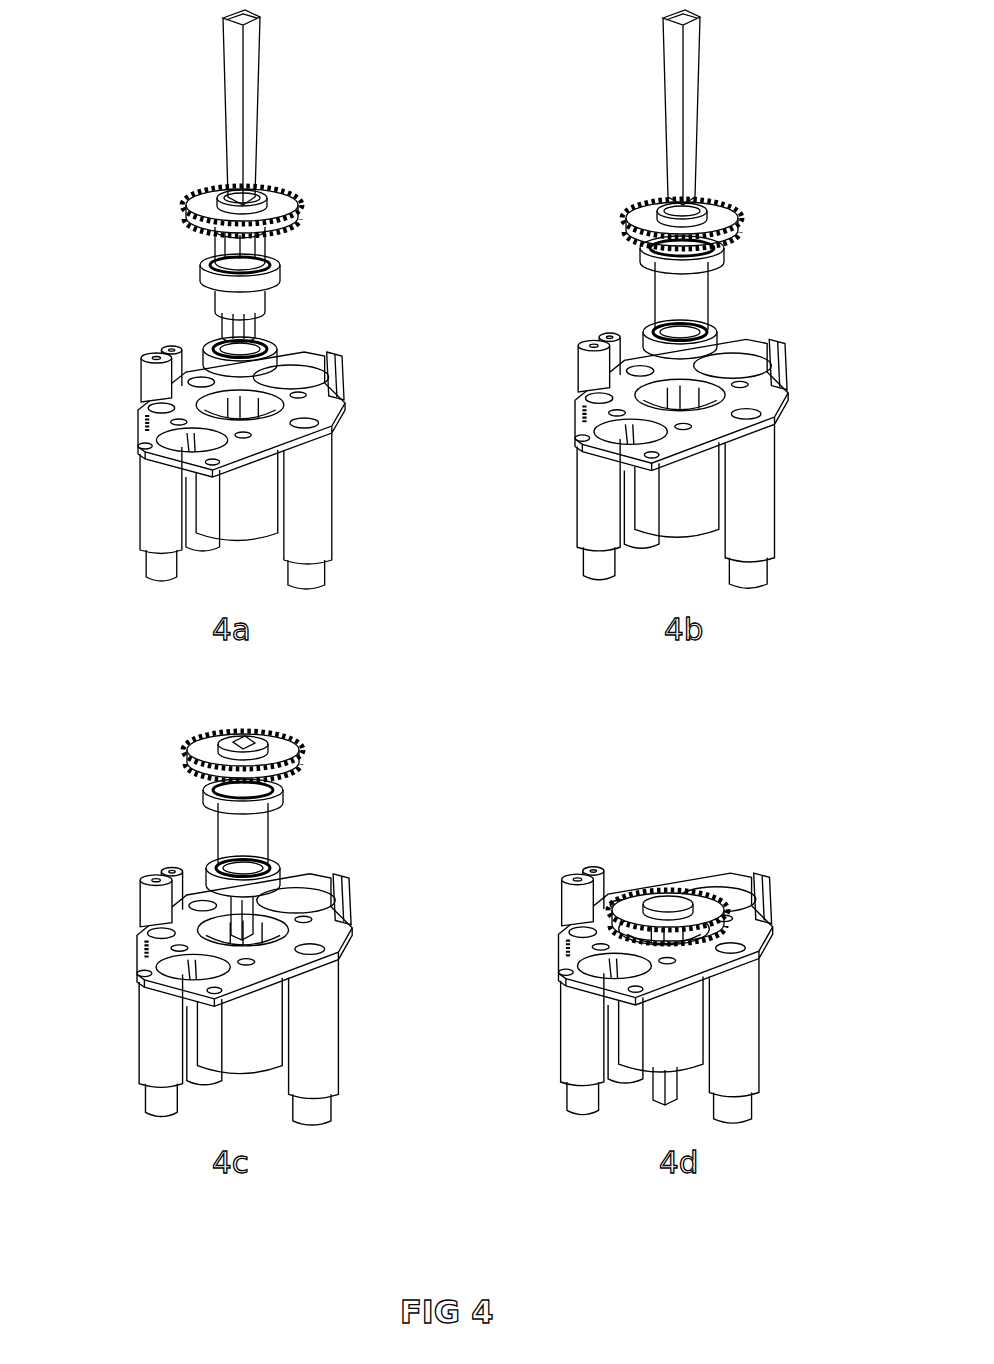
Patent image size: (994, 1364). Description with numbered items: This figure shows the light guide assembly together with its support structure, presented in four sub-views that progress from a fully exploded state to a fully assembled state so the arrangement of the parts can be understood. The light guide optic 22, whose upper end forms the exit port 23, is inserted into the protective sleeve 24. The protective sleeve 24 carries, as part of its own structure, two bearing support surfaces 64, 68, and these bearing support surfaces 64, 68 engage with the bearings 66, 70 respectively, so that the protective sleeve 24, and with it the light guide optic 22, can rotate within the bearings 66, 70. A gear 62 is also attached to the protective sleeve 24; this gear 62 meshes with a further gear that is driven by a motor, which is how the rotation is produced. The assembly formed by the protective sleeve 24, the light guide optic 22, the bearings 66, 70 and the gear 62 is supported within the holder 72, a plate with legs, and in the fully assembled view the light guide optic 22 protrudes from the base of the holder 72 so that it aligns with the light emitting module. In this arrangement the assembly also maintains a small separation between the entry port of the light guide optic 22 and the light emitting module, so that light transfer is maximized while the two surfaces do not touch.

The light guide optic 22 is at (236, 145).
The exit port 23 is at (237, 13).
The protective sleeve 24 is at (258, 262).
The gear 62 is at (205, 202).
The bearing support surface 64 is at (220, 246).
The bearing 66 is at (207, 278).
The bearing support surface 68 is at (252, 325).
The bearing 70 is at (265, 360).
The holder 72 is at (141, 425).